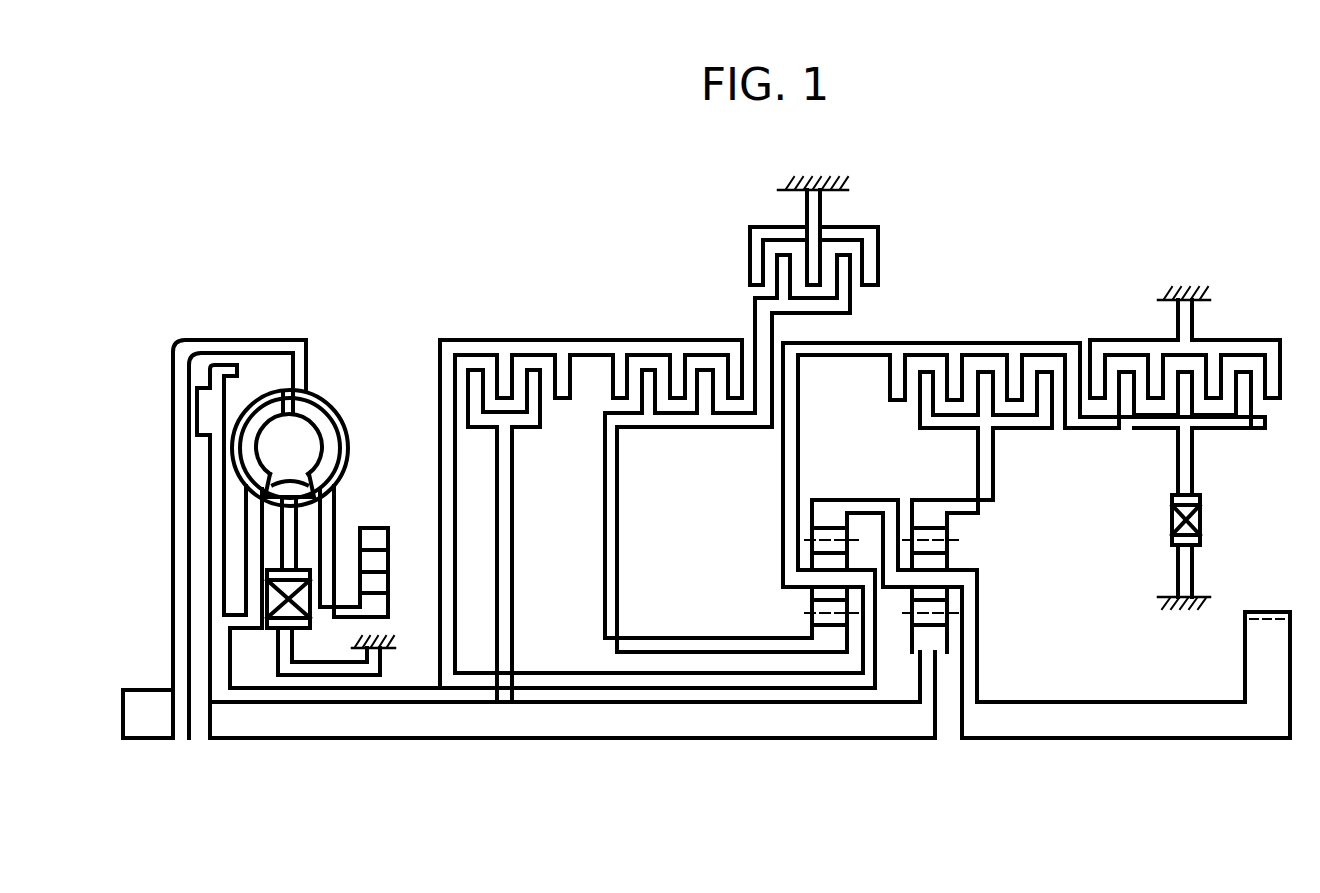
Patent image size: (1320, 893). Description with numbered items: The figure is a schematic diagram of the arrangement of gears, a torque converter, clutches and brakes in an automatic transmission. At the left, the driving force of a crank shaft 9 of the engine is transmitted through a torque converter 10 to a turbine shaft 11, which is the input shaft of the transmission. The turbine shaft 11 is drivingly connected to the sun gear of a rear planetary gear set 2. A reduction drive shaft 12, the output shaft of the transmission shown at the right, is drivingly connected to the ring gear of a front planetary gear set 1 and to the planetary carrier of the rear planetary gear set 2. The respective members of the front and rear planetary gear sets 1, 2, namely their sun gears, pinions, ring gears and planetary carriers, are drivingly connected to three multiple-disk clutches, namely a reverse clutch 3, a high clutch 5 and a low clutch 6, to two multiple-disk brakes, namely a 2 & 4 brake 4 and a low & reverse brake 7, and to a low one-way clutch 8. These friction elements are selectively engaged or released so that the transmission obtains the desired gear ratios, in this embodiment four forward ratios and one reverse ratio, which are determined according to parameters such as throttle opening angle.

The front planetary gear set 1 is at (827, 640).
The rear planetary gear set 2 is at (930, 640).
The reverse clutch 3 is at (683, 338).
The 2 & 4 brake 4 is at (900, 242).
The high clutch 5 is at (548, 338).
The low clutch 6 is at (984, 341).
The low & reverse brake 7 is at (1246, 340).
The low one-way clutch 8 is at (1208, 520).
The crank shaft 9 is at (173, 741).
The torque converter 10 is at (277, 432).
The turbine shaft 11 is at (563, 741).
The reduction drive shaft 12 is at (1128, 741).